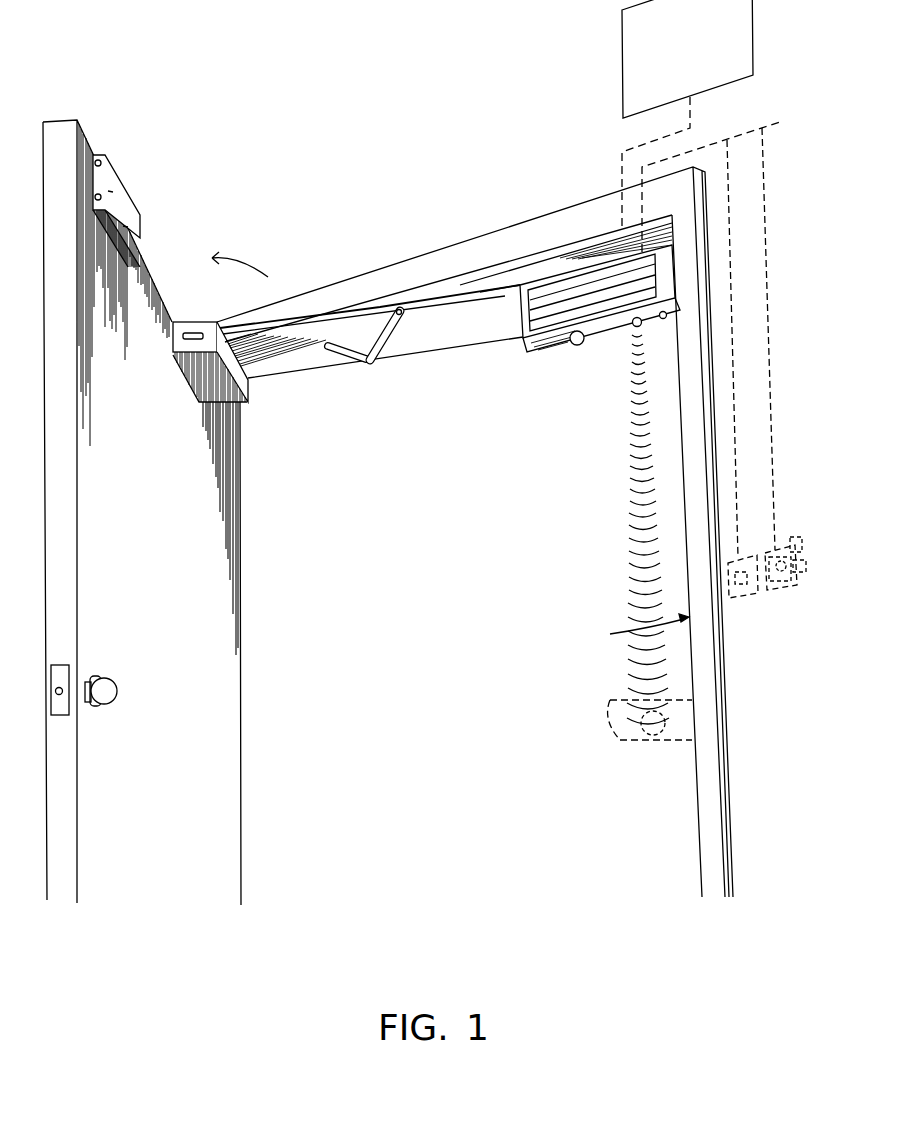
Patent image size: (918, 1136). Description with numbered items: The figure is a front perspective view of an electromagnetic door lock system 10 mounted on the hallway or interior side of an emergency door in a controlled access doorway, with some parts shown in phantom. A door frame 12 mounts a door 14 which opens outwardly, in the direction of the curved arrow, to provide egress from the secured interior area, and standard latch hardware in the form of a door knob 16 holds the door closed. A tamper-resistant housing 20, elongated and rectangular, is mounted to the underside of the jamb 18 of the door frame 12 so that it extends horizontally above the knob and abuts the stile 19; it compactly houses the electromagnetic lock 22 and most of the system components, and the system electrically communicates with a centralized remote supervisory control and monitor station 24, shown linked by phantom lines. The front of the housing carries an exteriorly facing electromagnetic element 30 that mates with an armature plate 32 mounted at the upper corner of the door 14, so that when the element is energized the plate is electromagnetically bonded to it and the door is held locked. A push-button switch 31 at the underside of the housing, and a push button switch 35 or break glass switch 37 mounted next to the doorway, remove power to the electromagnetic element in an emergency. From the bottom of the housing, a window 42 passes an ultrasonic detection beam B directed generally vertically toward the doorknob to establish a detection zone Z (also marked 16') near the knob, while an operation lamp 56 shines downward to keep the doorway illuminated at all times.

The electromagnetic door lock system 10 is at (358, 216).
The door frame 12 is at (703, 753).
The door 14 is at (215, 782).
The door knob 16 is at (126, 700).
The detection zone 16' is at (631, 705).
The jamb 18 is at (450, 307).
The stile 19 is at (633, 629).
The tamper-resistant housing 20 is at (550, 352).
The electromagnetic lock 22 is at (538, 309).
The central station 24 is at (622, 36).
The electromagnetic element 30 is at (553, 287).
The push-button switch 31 is at (665, 317).
The armature plate 32 is at (123, 208).
The push button switch 35 is at (742, 598).
The break glass switch 37 is at (782, 588).
The window 42 is at (635, 327).
The operation lamp 56 is at (575, 343).
The ultrasonic detection beam B is at (637, 492).
The detection zone Z is at (630, 735).